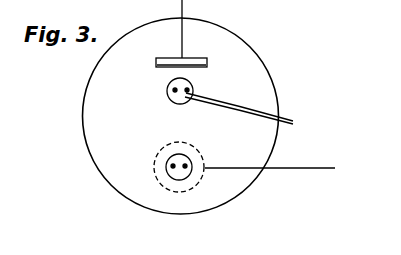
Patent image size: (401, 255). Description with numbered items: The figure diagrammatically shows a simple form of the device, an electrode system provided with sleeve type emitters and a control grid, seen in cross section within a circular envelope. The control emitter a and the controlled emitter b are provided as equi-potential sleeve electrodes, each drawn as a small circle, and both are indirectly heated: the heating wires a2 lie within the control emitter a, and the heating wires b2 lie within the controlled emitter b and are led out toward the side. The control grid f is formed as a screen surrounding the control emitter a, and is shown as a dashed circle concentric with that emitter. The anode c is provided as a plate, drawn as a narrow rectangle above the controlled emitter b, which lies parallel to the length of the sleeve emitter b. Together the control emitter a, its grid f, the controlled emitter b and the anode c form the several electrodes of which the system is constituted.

The anode c is at (184, 63).
The controlled emitter b is at (193, 86).
The heating wires b2 is at (251, 115).
The control emitter a is at (184, 175).
The heating wires a2 is at (185, 170).
The control grid f is at (155, 172).